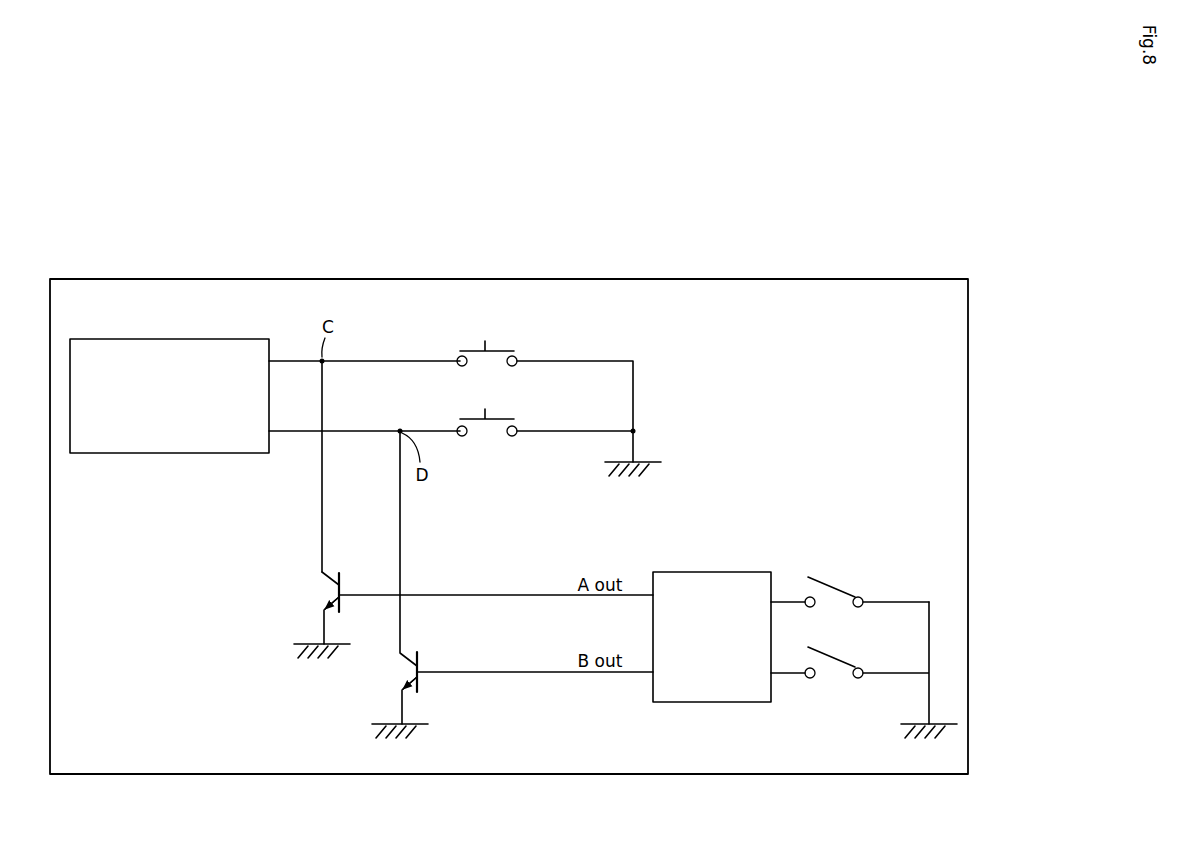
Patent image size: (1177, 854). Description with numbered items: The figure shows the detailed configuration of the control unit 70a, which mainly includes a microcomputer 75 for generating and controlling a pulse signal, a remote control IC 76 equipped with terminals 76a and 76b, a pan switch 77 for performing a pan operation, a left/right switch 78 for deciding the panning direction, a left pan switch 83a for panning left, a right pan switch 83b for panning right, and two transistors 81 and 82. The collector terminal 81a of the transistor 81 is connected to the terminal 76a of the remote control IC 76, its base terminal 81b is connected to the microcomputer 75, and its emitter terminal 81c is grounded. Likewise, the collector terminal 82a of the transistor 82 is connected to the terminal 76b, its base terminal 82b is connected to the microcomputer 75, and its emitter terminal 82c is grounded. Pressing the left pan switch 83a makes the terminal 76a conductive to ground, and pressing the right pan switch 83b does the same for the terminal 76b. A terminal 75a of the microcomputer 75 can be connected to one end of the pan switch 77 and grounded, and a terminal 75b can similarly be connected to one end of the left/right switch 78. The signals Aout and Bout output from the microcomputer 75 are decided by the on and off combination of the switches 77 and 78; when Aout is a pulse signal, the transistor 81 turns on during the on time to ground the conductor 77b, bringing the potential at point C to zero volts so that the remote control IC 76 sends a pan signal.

The control unit 70a is at (475, 775).
The remote control IC 76 is at (183, 445).
The terminal 76a is at (272, 358).
The terminal 76b is at (273, 433).
The left pan switch 83a is at (505, 349).
The right pan switch 83b is at (503, 417).
The conductor 77b is at (320, 503).
The transistor 81 is at (446, 594).
The collector terminal 81a is at (339, 574).
The base terminal 81b is at (367, 599).
The emitter terminal 81c is at (330, 604).
The transistor 82 is at (499, 584).
The collector terminal 82a is at (410, 656).
The base terminal 82b is at (445, 676).
The emitter terminal 82c is at (411, 692).
The microcomputer 75 is at (712, 590).
The terminal 75a is at (773, 600).
The terminal 75b is at (772, 676).
The pan switch 77 is at (830, 580).
The left/right switch 78 is at (832, 661).